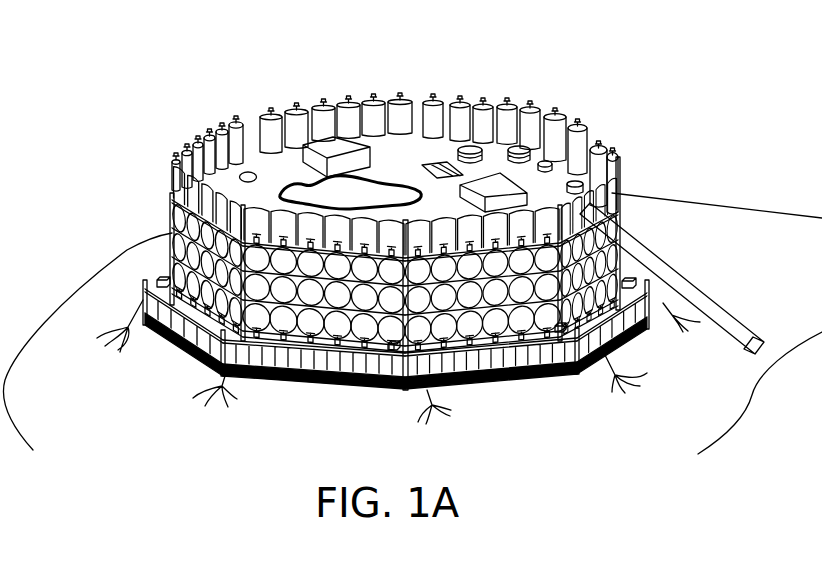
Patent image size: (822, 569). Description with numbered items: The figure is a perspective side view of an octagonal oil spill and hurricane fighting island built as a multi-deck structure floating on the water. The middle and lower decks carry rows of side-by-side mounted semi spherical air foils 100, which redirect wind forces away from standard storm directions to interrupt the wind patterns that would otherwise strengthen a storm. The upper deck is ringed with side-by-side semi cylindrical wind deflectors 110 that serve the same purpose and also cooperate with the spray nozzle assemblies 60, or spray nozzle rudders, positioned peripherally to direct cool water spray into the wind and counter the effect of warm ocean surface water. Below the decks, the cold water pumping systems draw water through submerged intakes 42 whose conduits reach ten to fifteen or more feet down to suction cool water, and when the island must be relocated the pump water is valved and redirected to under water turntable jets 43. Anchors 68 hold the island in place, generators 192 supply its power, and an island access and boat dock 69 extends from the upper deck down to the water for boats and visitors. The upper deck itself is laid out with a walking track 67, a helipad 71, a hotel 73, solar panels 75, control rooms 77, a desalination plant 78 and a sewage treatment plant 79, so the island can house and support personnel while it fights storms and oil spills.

The helipad 71 is at (244, 173).
The walking track 67 is at (300, 185).
The hotel 73 is at (329, 142).
The solar panels 75 is at (440, 162).
The control rooms 77 is at (475, 147).
The sewage treatment plant 79 is at (514, 147).
The desalination plant 78 is at (548, 162).
The semi cylindrical wind deflectors 110 is at (620, 157).
The spray nozzle assemblies 60 is at (586, 211).
The generators 192 is at (630, 274).
The island access and boat dock 69 is at (722, 306).
The anchors 68 is at (104, 342).
The semi spherical air foils 100 is at (173, 217).
The submerged intakes 42 is at (348, 385).
The under water turntable jets 43 is at (485, 385).